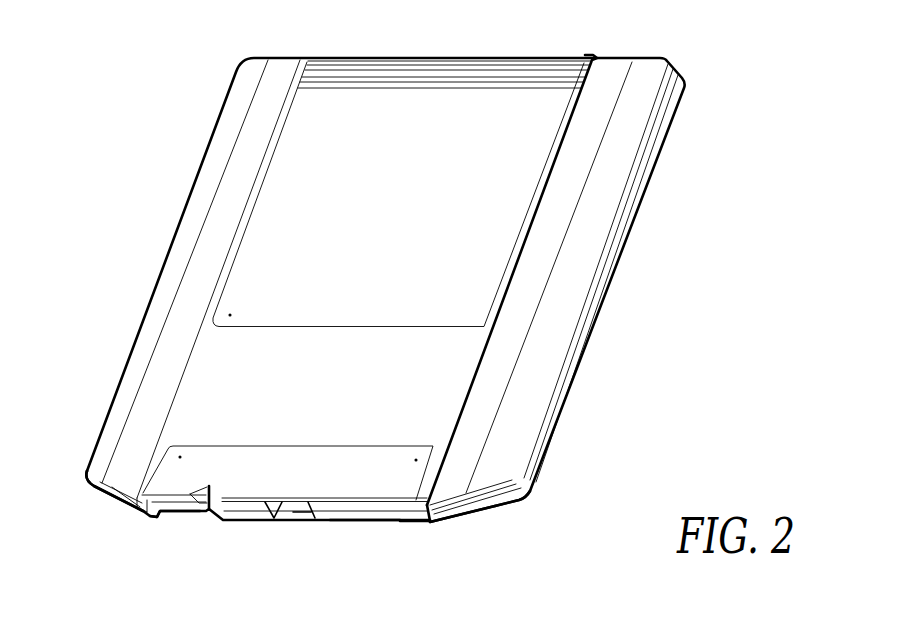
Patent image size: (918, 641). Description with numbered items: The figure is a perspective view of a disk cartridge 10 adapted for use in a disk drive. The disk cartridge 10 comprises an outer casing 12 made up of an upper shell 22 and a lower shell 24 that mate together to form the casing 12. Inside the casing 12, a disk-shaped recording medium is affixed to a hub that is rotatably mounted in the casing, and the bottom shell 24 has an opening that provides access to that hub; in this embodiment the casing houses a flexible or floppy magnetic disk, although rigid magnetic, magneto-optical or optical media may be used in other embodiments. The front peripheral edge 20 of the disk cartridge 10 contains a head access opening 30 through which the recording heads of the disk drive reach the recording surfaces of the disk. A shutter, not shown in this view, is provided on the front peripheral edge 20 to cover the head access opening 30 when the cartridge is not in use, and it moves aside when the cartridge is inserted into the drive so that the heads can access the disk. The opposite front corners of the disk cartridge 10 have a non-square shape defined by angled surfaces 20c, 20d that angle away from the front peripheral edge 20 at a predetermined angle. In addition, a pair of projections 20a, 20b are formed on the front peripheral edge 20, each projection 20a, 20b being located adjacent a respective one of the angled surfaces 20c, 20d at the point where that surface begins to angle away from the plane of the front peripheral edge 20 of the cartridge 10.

The disk cartridge 10 is at (208, 27).
The outer casing 12 is at (525, 58).
The lower shell 24 is at (598, 293).
The upper shell 22 is at (492, 490).
The front peripheral edge 20 is at (383, 522).
The projection 20a is at (430, 522).
The projection 20b is at (152, 520).
The angled surface 20c is at (468, 510).
The angled surface 20d is at (120, 508).
The head access opening 30 is at (293, 512).